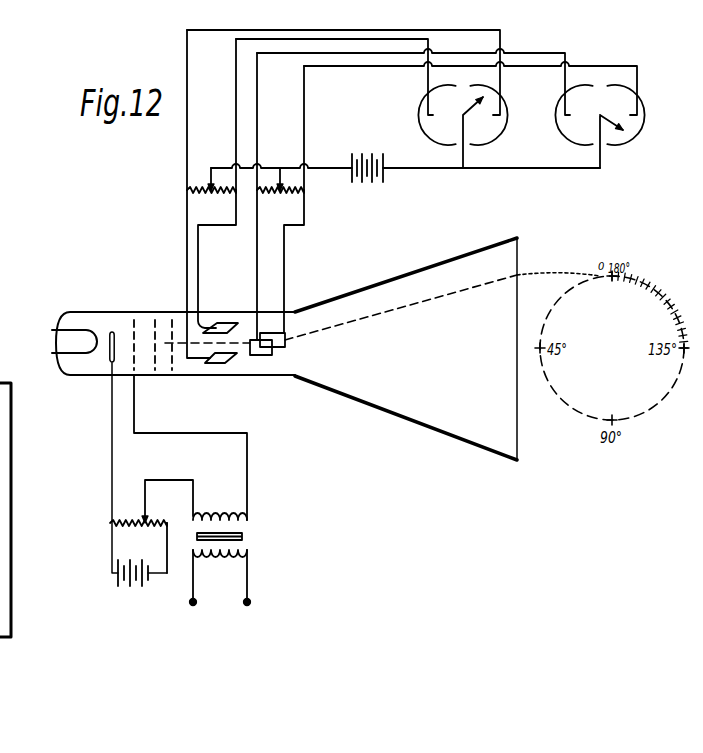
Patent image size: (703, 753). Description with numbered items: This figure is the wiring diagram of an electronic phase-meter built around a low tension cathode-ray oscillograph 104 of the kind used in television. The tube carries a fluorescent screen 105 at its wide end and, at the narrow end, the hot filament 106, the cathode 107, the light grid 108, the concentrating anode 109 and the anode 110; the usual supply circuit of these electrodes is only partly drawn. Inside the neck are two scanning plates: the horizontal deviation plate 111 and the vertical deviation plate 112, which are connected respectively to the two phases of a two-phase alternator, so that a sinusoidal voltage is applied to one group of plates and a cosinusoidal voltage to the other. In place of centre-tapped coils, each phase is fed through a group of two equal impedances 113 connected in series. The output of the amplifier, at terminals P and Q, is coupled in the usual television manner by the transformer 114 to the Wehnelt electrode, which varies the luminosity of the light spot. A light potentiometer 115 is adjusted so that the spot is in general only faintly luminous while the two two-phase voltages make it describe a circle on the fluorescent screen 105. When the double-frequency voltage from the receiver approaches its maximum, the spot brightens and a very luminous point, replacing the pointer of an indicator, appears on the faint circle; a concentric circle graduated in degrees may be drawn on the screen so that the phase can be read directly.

The low tension cathode-ray oscillograph 104 is at (413, 413).
The fluorescent screen 105 is at (517, 435).
The hot filament 106 is at (75, 332).
The cathode 107 is at (108, 332).
The light grid 108 is at (132, 320).
The concentrating anode 109 is at (153, 322).
The anode 110 is at (173, 322).
The horizontal deviation plate 111 is at (262, 353).
The vertical deviation plate 112 is at (223, 360).
The equal impedances 113 is at (275, 208).
The transformer 114 is at (242, 535).
The light potentiometer 115 is at (140, 520).